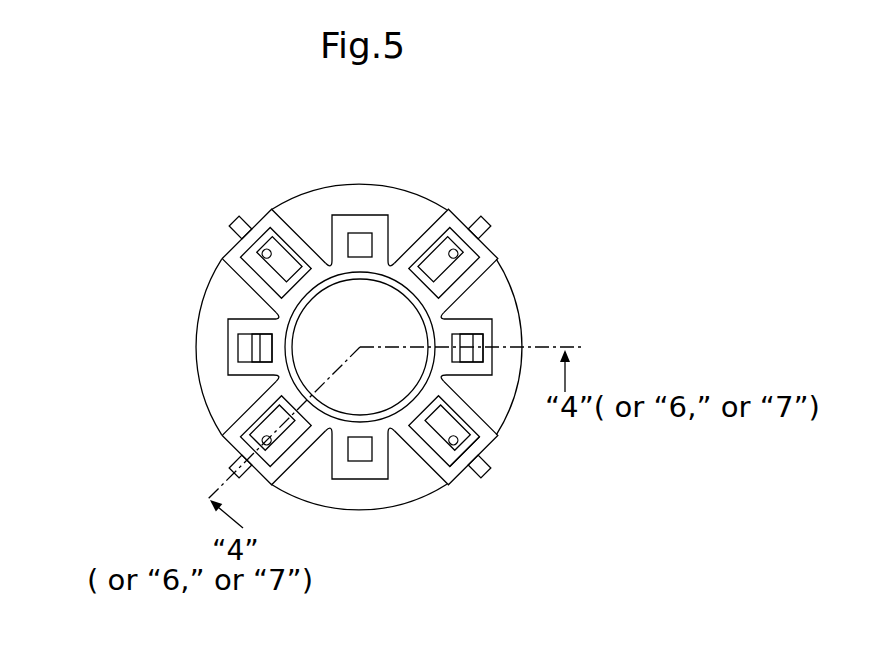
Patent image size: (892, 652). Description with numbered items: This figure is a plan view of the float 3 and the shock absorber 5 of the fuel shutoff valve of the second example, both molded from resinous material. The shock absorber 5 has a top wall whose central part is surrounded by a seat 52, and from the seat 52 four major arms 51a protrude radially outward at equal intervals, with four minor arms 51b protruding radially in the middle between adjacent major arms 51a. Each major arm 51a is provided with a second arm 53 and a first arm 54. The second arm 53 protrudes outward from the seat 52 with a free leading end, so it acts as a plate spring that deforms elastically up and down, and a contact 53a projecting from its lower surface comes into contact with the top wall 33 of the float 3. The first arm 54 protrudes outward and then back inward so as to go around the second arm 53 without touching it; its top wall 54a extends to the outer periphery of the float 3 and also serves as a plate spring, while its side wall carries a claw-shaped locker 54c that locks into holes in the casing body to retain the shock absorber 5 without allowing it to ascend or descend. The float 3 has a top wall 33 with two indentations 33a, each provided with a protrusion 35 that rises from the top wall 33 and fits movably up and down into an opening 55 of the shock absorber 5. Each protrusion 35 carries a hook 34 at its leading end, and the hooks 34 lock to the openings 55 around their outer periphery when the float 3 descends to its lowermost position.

The float 3 is at (303, 192).
The shock absorber 5 is at (348, 486).
The top wall 33 is at (415, 213).
The indentation 33a is at (208, 365).
The hook 34 is at (262, 362).
The protrusion 35 is at (258, 311).
The major arm 51a is at (262, 292).
The minor arm 51b is at (357, 232).
The seat 52 is at (342, 398).
The second arm 53 is at (487, 446).
The contact 53a is at (465, 452).
The first arm 54 is at (423, 452).
The top wall 54a is at (478, 433).
The locker 54c is at (235, 221).
The opening 55 is at (262, 345).